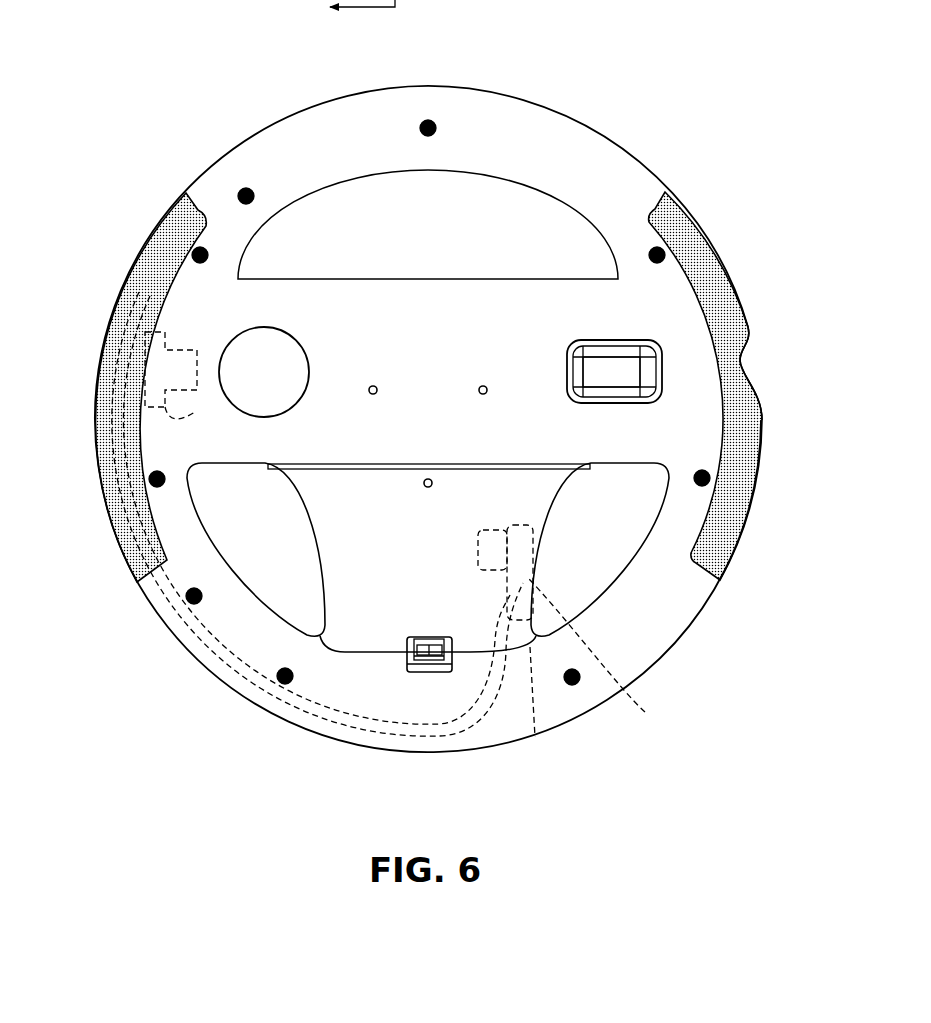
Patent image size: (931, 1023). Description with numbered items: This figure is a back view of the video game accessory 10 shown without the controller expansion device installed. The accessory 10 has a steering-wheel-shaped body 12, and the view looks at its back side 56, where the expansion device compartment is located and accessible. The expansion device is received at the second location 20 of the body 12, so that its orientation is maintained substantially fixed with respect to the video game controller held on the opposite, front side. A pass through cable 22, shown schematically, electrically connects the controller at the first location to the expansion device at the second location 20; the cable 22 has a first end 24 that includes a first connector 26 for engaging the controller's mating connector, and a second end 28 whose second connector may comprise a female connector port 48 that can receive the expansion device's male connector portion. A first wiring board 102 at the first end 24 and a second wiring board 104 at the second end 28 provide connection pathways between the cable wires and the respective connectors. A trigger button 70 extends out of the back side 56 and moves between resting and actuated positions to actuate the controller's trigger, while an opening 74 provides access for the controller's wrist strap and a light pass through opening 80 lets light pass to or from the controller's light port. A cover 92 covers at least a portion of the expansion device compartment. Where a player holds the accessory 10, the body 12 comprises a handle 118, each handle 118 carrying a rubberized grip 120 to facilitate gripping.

The video game accessory 10 is at (225, 80).
The body 12 is at (612, 135).
The second location 20 is at (330, 553).
The pass through cable 22 is at (320, 732).
The first end 24 is at (118, 300).
The first connector 26 is at (95, 447).
The second end 28 is at (535, 737).
The female connector port 48 is at (478, 562).
The back side 56 is at (345, 318).
The trigger button 70 is at (608, 370).
The opening 74 is at (220, 357).
The light pass through opening 80 is at (753, 353).
The cover 92 is at (377, 617).
The first wiring board 102 is at (93, 420).
The second wiring board 104 is at (646, 651).
The handle 118 is at (431, 393).
The grip 120 is at (115, 535).